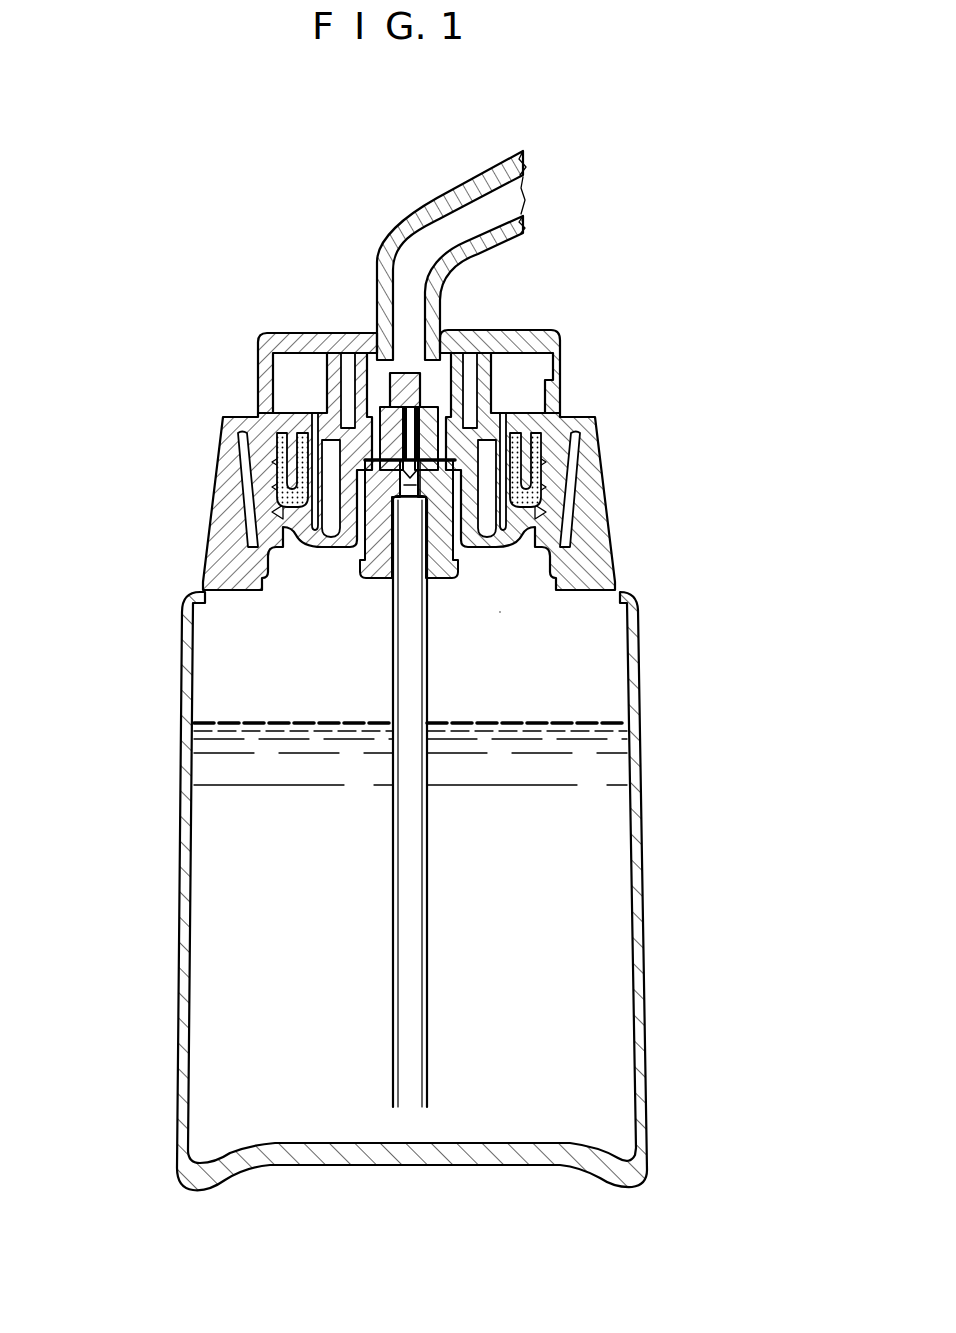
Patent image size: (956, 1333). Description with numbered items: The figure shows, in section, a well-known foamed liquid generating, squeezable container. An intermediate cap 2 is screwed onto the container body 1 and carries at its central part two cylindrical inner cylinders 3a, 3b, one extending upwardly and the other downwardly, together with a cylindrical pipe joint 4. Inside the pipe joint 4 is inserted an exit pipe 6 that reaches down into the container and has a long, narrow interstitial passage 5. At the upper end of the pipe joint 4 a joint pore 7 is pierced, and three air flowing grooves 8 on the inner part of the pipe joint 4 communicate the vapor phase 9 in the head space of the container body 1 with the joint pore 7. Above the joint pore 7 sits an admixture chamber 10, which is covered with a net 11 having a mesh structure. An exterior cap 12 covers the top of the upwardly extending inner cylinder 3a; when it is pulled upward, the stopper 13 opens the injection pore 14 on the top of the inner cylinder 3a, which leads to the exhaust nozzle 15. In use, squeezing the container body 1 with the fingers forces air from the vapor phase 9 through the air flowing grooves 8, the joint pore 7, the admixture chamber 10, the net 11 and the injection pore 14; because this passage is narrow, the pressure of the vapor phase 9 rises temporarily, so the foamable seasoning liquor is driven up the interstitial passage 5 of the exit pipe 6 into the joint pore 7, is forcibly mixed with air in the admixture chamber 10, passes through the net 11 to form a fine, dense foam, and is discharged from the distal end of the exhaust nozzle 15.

The container body 1 is at (640, 682).
The intermediate cap 2 is at (212, 489).
The inner cylinder (upwardly extending) 3a is at (400, 458).
The inner cylinder (downwardly extending) 3b is at (378, 525).
The pipe joint 4 is at (395, 492).
The interstitial passage 5 is at (480, 500).
The exit pipe 6 is at (430, 700).
The joint pore 7 is at (415, 487).
The air flowing grooves 8 is at (440, 530).
The vapor phase 9 is at (500, 612).
The admixture chamber 10 is at (390, 445).
The net 11 is at (470, 446).
The exterior cap 12 is at (383, 245).
The stopper 13 is at (378, 330).
The injection pore 14 is at (415, 330).
The exhaust nozzle 15 is at (525, 188).